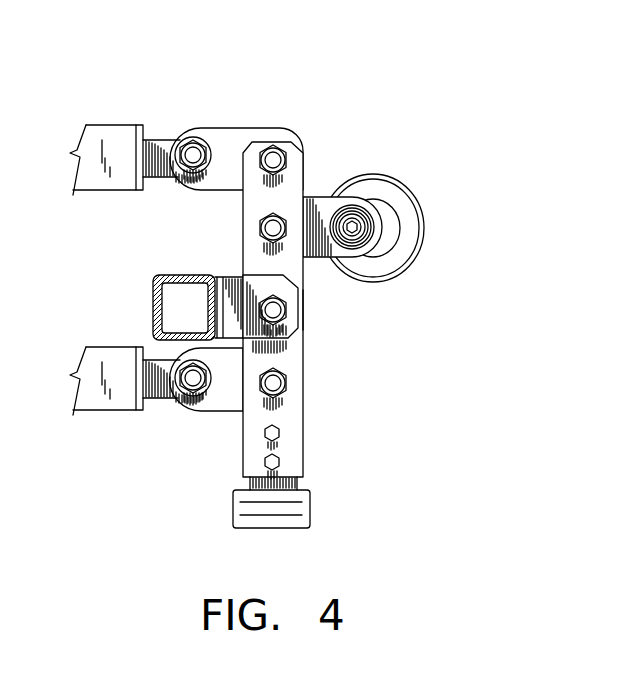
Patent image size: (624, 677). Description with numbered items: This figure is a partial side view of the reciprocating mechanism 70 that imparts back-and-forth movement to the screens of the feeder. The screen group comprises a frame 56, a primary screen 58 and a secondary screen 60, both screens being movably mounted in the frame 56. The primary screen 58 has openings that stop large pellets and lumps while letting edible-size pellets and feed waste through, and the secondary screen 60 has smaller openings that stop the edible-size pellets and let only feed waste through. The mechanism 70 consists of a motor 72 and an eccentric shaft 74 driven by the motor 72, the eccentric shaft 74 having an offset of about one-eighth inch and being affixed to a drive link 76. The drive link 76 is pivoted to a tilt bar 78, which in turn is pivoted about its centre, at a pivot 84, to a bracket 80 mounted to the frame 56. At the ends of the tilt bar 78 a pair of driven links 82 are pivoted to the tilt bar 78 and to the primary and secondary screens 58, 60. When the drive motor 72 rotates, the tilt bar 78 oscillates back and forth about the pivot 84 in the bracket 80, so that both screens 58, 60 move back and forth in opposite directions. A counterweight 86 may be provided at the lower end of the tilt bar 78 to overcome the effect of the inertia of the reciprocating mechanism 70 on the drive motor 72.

The frame 56 is at (153, 297).
The primary screen 58 is at (120, 125).
The secondary screen 60 is at (102, 347).
The reciprocating mechanism 70 is at (482, 79).
The motor 72 is at (425, 178).
The eccentric shaft 74 is at (353, 230).
The drive link 76 is at (320, 196).
The tilt bar 78 is at (243, 216).
The bracket 80 is at (305, 310).
The driven links 82 is at (233, 127).
The pivot 84 is at (282, 318).
The counterweight 86 is at (311, 508).